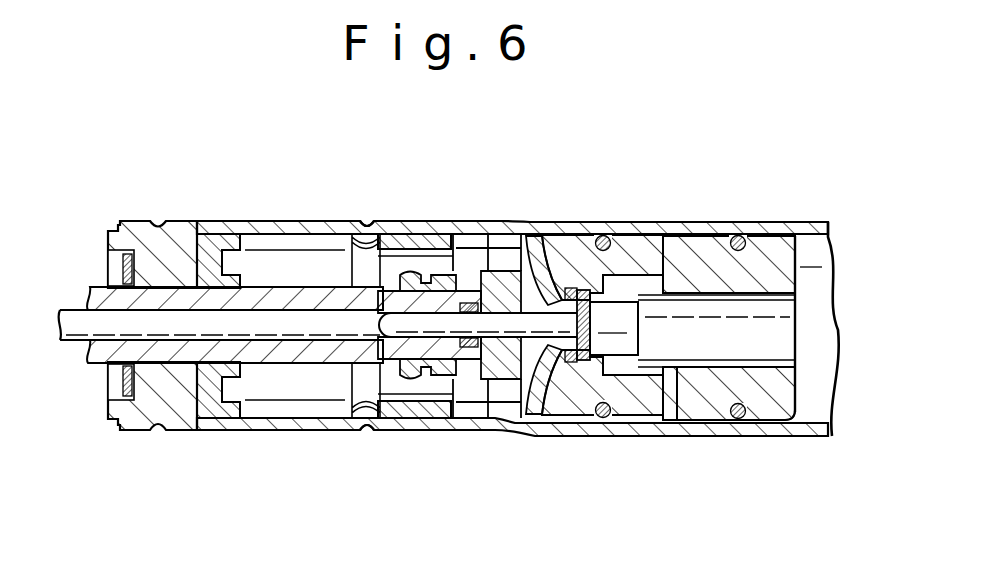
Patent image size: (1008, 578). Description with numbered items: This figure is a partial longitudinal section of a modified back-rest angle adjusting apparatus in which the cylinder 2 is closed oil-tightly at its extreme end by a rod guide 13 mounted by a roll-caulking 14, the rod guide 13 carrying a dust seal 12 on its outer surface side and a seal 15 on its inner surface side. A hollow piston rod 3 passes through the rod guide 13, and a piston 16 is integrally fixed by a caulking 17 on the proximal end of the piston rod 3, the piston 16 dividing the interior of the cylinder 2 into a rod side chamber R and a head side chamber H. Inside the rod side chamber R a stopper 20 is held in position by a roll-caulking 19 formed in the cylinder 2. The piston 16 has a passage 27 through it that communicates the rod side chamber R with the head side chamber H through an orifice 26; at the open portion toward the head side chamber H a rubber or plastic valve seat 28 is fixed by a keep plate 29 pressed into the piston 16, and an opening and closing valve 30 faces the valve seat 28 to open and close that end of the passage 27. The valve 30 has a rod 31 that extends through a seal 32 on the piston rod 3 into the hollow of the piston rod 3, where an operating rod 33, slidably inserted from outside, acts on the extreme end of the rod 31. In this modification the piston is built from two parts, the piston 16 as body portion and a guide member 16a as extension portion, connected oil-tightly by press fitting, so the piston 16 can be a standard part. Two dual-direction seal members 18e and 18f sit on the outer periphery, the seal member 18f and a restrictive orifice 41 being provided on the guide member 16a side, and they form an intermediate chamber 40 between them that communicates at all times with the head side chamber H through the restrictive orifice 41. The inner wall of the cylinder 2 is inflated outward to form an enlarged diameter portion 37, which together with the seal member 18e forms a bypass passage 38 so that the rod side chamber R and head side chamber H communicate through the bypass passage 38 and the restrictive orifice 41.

The cylinder 2 is at (297, 432).
The piston rod 3 is at (290, 295).
The dust seal 12 is at (120, 265).
The rod guide 13 is at (137, 222).
The roll-caulking 14 is at (160, 432).
The seal 15 is at (213, 230).
The piston 16 is at (655, 400).
The guide member 16a is at (774, 250).
The caulking 17 is at (424, 255).
The seal member 18e is at (603, 238).
The seal member 18f is at (740, 235).
The roll-caulking 19 is at (367, 435).
The stopper 20 is at (393, 240).
The orifice 26 is at (545, 245).
The passage 27 is at (533, 288).
The valve seat 28 is at (540, 412).
The keep plate 29 is at (582, 362).
The opening and closing valve 30 is at (632, 335).
The rod 31 is at (400, 336).
The seal 32 is at (462, 273).
The operating rod 33 is at (78, 343).
The enlarged diameter portion 37 is at (632, 240).
The bypass passage 38 is at (605, 420).
The intermediate chamber 40 is at (705, 425).
The restrictive orifice 41 is at (690, 410).
The rod side chamber R is at (470, 405).
The head side chamber H is at (812, 393).